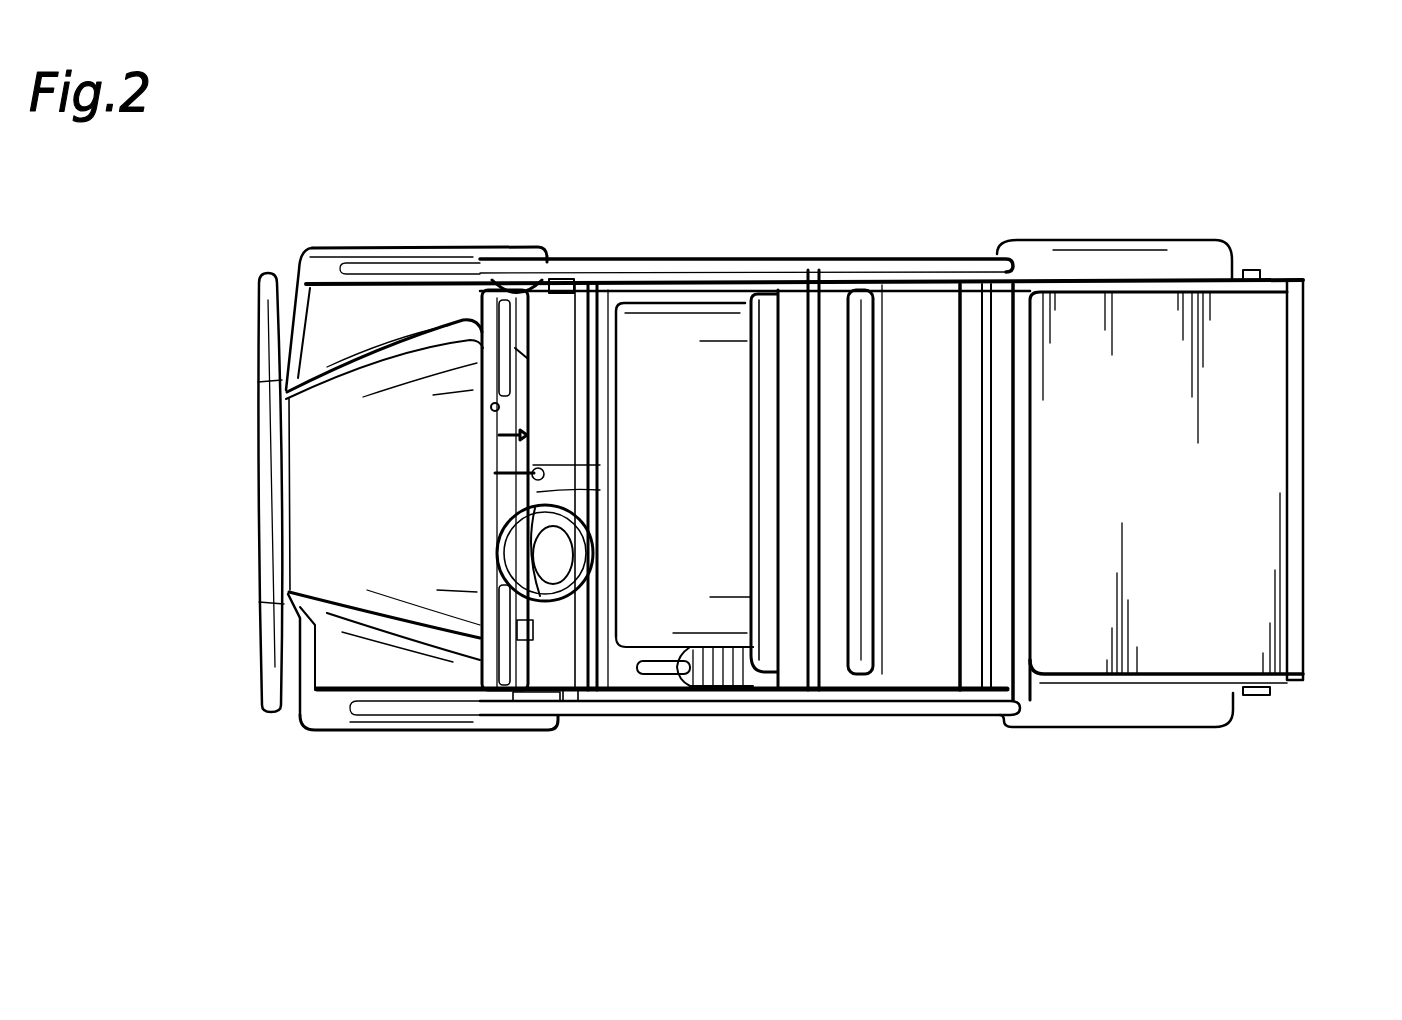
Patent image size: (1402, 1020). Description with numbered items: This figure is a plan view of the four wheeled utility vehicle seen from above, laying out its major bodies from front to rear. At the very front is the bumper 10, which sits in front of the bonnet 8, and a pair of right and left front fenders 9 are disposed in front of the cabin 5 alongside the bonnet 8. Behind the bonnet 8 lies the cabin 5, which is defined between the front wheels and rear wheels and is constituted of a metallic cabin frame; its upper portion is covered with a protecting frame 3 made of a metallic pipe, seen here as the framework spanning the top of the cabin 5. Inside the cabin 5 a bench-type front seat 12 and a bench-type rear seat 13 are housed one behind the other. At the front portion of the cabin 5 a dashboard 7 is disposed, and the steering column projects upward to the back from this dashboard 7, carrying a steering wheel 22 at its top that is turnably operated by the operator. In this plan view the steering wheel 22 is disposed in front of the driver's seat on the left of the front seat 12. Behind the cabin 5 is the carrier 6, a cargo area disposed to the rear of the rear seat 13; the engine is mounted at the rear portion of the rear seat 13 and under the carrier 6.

The protecting frame 3 is at (797, 258).
The cabin 5 is at (668, 340).
The carrier 6 is at (1258, 593).
The dashboard 7 is at (493, 447).
The bonnet 8 is at (310, 440).
The front fenders 9 is at (307, 250).
The bumper 10 is at (257, 495).
The front seat 12 is at (702, 612).
The rear seat 13 is at (925, 643).
The steering wheel 22 is at (587, 513).